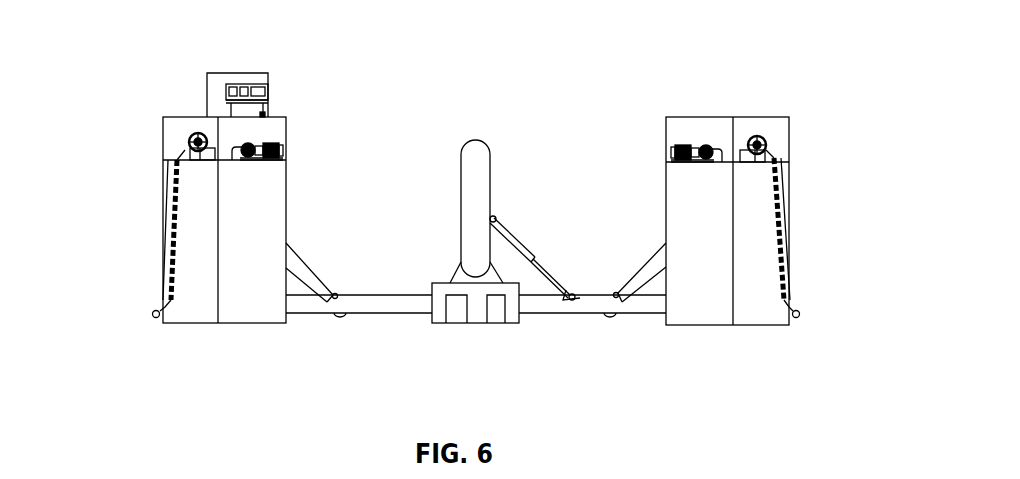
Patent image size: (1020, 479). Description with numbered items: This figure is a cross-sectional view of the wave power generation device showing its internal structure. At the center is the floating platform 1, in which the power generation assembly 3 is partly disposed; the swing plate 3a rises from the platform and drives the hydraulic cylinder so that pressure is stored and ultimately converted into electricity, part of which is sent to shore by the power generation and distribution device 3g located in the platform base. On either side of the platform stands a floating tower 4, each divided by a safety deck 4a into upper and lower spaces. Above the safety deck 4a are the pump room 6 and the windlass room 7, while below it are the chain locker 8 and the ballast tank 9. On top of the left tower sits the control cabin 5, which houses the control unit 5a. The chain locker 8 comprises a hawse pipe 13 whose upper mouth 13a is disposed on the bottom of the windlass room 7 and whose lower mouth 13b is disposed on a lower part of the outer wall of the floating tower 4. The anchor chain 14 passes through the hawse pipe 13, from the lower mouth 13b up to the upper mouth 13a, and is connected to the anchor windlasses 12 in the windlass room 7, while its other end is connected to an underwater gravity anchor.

The floating platform 1 is at (463, 326).
The power generation assembly 3 is at (523, 166).
The swing plate 3a is at (483, 177).
The power generation and distribution device 3g is at (496, 311).
The floating tower 4 is at (307, 139).
The safety deck 4a is at (236, 163).
The control cabin 5 is at (183, 71).
The control unit 5a is at (266, 90).
The pump room 6 is at (687, 131).
The windlass room 7 is at (773, 133).
The chain locker 8 is at (183, 293).
The ballast tank 9 is at (255, 293).
The anchor windlasses 12 is at (186, 146).
The hawse pipe 13 is at (164, 222).
The upper mouth 13a is at (783, 158).
The lower mouth 13b is at (790, 289).
The anchor chain 14 is at (166, 281).